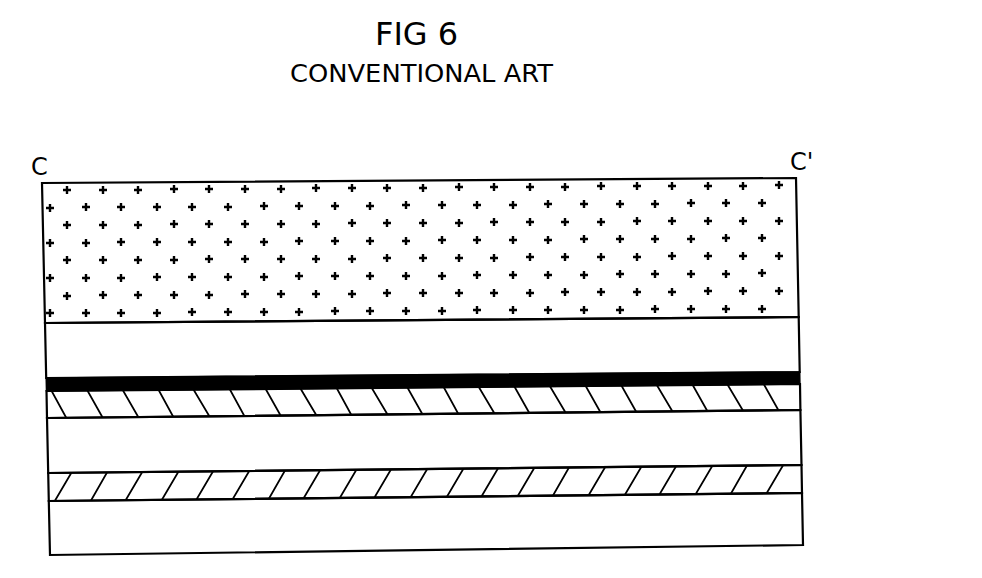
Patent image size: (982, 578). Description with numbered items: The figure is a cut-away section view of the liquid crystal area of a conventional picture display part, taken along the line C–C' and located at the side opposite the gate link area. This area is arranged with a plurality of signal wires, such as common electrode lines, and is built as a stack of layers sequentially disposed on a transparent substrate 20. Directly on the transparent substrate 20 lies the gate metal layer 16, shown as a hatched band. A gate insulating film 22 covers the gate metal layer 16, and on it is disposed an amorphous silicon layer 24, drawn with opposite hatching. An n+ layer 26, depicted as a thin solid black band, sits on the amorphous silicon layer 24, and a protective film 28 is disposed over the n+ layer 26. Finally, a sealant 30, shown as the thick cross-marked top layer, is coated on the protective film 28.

The sealant 30 is at (798, 248).
The protective film 28 is at (799, 338).
The n+ layer 26 is at (800, 378).
The amorphous silicon layer 24 is at (800, 397).
The gate insulating film 22 is at (801, 437).
The gate metal layer 16 is at (802, 480).
The transparent substrate 20 is at (803, 523).